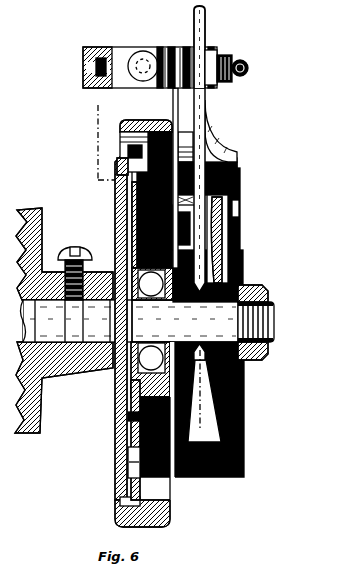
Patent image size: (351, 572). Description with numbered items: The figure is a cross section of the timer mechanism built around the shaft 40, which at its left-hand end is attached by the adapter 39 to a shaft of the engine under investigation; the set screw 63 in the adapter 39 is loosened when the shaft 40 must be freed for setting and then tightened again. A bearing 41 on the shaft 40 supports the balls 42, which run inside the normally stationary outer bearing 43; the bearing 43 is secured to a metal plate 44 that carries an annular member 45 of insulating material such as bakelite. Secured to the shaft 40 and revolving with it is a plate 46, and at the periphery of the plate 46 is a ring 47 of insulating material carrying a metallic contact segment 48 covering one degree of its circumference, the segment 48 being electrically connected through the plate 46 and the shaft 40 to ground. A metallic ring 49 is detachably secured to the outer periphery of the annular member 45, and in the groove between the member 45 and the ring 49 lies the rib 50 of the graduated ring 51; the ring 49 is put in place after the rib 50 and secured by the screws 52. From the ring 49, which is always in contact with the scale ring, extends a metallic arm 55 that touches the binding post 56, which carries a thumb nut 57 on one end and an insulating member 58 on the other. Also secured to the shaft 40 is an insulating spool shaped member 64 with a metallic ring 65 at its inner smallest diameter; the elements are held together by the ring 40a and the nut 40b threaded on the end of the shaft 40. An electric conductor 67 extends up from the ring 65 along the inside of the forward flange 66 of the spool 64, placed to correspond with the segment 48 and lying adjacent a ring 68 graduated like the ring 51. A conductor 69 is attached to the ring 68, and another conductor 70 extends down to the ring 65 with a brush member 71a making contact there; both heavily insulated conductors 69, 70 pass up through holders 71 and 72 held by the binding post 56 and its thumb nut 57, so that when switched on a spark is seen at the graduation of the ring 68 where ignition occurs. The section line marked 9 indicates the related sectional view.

The section line 9 is at (108, 105).
The adapter 39 is at (44, 378).
The shaft 40 is at (245, 280).
The ring 40a is at (270, 352).
The nut 40b is at (266, 292).
The bearing 41 is at (113, 378).
The balls 42 is at (120, 396).
The outer bearing 43 is at (126, 417).
The metal plate 44 is at (126, 452).
The annular member 45 is at (195, 479).
The plate 46 is at (116, 209).
The ring 47 is at (120, 154).
The contact segment 48 is at (122, 138).
The ring 49 is at (240, 169).
The rib 50 is at (176, 133).
The graduated ring 51 is at (120, 123).
The screws 52 is at (220, 143).
The metallic arm 55 is at (172, 105).
The binding post 56 is at (248, 66).
The thumb nut 57 is at (233, 57).
The insulating member 58 is at (178, 47).
The set screw 63 is at (85, 246).
The spool shaped member 64 is at (244, 387).
The metallic ring 65 is at (246, 375).
The forward flange 66 is at (243, 238).
The electric conductor 67 is at (236, 222).
The ring 68 is at (242, 190).
The conductor 69 is at (240, 152).
The conductor 70 is at (201, 116).
The holder 71 is at (214, 54).
The brush member 71a is at (244, 394).
The holder 72 is at (206, 44).